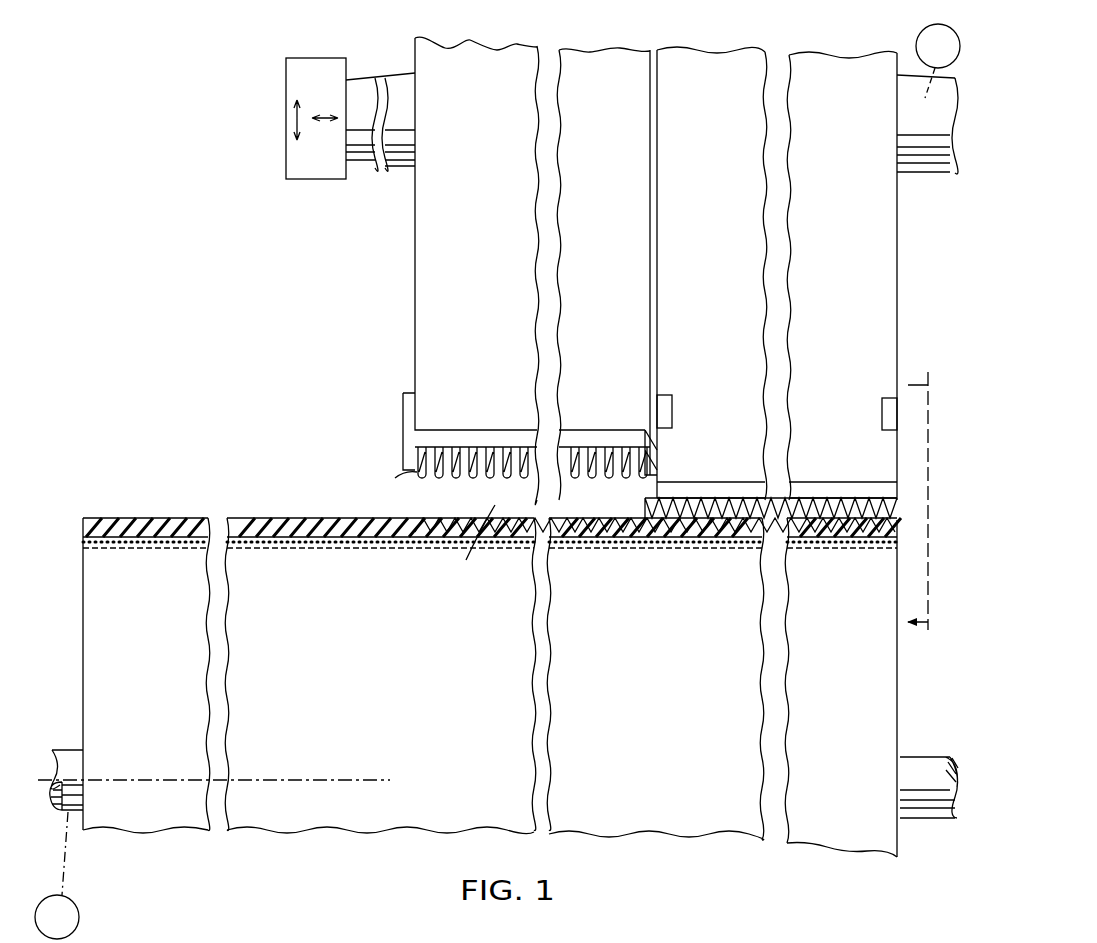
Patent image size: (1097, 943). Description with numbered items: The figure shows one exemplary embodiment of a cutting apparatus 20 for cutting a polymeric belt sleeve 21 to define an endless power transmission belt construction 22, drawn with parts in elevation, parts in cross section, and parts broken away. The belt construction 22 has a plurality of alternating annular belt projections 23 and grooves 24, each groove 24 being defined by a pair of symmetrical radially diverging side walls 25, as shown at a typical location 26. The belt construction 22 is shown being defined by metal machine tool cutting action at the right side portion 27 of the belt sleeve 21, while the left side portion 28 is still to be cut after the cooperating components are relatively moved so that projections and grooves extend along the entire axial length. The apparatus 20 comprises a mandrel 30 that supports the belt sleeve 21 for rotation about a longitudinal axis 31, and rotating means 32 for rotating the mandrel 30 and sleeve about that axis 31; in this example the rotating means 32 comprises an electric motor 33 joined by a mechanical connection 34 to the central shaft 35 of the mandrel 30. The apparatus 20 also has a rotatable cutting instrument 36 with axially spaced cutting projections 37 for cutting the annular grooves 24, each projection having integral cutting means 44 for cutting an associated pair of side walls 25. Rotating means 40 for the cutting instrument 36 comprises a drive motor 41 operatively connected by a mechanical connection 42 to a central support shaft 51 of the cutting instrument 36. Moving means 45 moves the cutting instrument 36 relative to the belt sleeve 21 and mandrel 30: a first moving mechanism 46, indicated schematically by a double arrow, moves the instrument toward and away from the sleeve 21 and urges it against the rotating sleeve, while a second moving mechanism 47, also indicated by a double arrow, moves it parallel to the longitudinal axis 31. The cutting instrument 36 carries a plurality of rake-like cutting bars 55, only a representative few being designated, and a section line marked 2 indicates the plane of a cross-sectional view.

The section line 2- 2 is at (923, 508).
The cutting apparatus 20 is at (230, 254).
The polymeric belt sleeve 21 is at (125, 516).
The endless power transmission belt construction 22 is at (903, 530).
The annular belt projections 23 is at (620, 528).
The grooves 24 is at (585, 528).
The symmetrical radially diverging side walls 25 is at (512, 462).
The typical location 26 is at (458, 518).
The right side portion 27 is at (820, 556).
The left side portion 28 is at (202, 516).
The mandrel 30 is at (100, 672).
The longitudinal axis 31 is at (180, 780).
The rotating means 32 is at (82, 824).
The electric motor 33 is at (80, 917).
The mechanical connection 34 is at (65, 852).
The central shaft 35 is at (70, 750).
The rotatable cutting instrument 36 is at (408, 318).
The cutting projections 37 is at (412, 480).
The rotating means 40 is at (918, 86).
The drive motor 41 is at (916, 44).
The mechanical connection 42 is at (920, 112).
The integral cutting means 44 is at (518, 480).
The moving means 45 is at (282, 54).
The first moving means 46 is at (292, 118).
The second moving means 47 is at (327, 122).
The central support shaft 51 is at (396, 165).
The rake-like cutting bars 55 is at (403, 432).